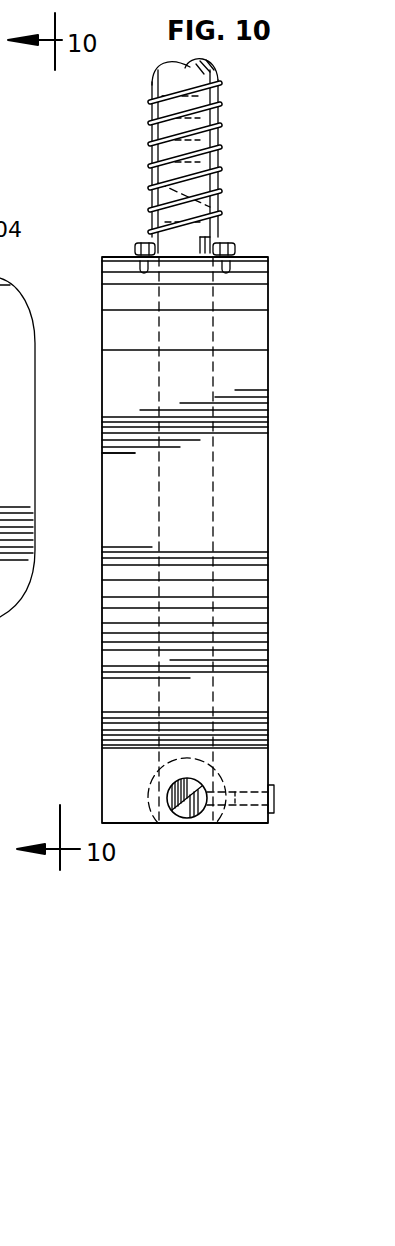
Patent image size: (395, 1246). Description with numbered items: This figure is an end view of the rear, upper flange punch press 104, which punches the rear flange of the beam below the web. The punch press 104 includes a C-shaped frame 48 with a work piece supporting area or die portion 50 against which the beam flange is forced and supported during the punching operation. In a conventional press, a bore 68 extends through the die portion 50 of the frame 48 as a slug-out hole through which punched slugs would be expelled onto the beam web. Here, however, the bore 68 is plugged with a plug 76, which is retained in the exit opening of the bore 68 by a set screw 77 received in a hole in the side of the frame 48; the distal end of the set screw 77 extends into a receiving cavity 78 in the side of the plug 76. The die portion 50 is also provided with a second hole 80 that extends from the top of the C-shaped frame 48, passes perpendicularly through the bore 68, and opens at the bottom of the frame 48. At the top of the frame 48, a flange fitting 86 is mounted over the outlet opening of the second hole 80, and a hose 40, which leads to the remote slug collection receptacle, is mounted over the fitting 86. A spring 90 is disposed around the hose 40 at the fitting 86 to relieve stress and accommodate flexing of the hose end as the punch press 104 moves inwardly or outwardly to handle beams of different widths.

The hose 40 is at (152, 80).
The spring 90 is at (150, 140).
The flange fitting 86 is at (226, 243).
The second punch press 104 is at (92, 252).
The second hole 80 is at (163, 482).
The C-shaped frame 48 is at (148, 520).
The die portion 50 is at (117, 775).
The receiving cavity 78 is at (201, 792).
The plug 76 is at (187, 818).
The bore 68 is at (196, 819).
The set screw 77 is at (272, 813).